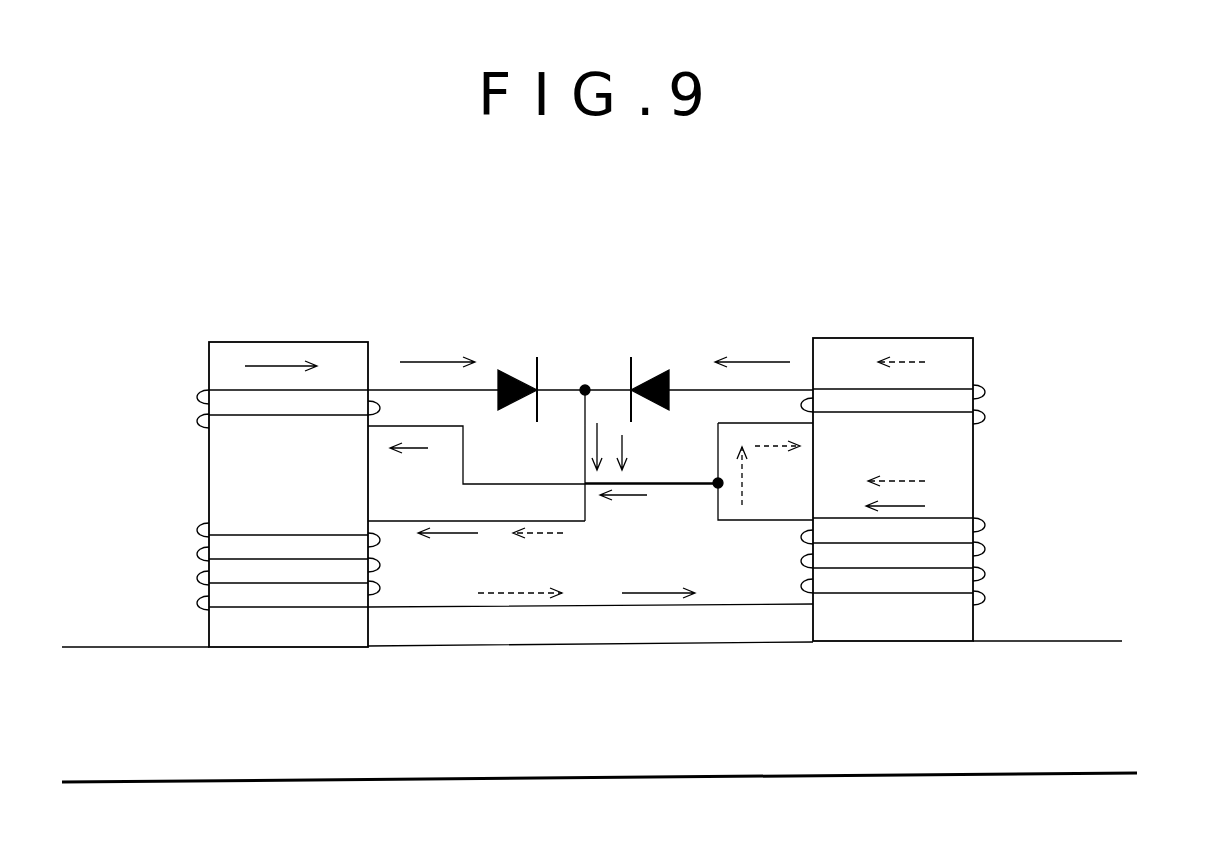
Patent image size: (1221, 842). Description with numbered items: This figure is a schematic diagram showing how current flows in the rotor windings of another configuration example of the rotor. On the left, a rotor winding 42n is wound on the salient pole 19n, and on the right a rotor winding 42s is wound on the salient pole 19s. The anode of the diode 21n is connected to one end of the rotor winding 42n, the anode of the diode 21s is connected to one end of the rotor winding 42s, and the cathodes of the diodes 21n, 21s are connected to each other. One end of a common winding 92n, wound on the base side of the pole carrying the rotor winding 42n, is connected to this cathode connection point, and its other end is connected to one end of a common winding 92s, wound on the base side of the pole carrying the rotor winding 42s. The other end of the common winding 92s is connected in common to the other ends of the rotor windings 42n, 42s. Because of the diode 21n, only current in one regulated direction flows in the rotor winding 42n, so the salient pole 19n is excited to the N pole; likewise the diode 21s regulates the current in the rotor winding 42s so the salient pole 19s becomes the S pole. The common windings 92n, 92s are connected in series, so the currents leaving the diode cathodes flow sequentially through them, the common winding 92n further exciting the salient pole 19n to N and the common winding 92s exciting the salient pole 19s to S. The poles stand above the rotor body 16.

The salient pole 19n is at (233, 342).
The salient pole 19s is at (945, 338).
The diode 21n is at (512, 365).
The diode 21s is at (657, 365).
The rotor winding 42n is at (196, 405).
The rotor winding 42s is at (985, 388).
The common winding 92n is at (196, 572).
The common winding 92s is at (985, 568).
The rotor 16 is at (1060, 711).